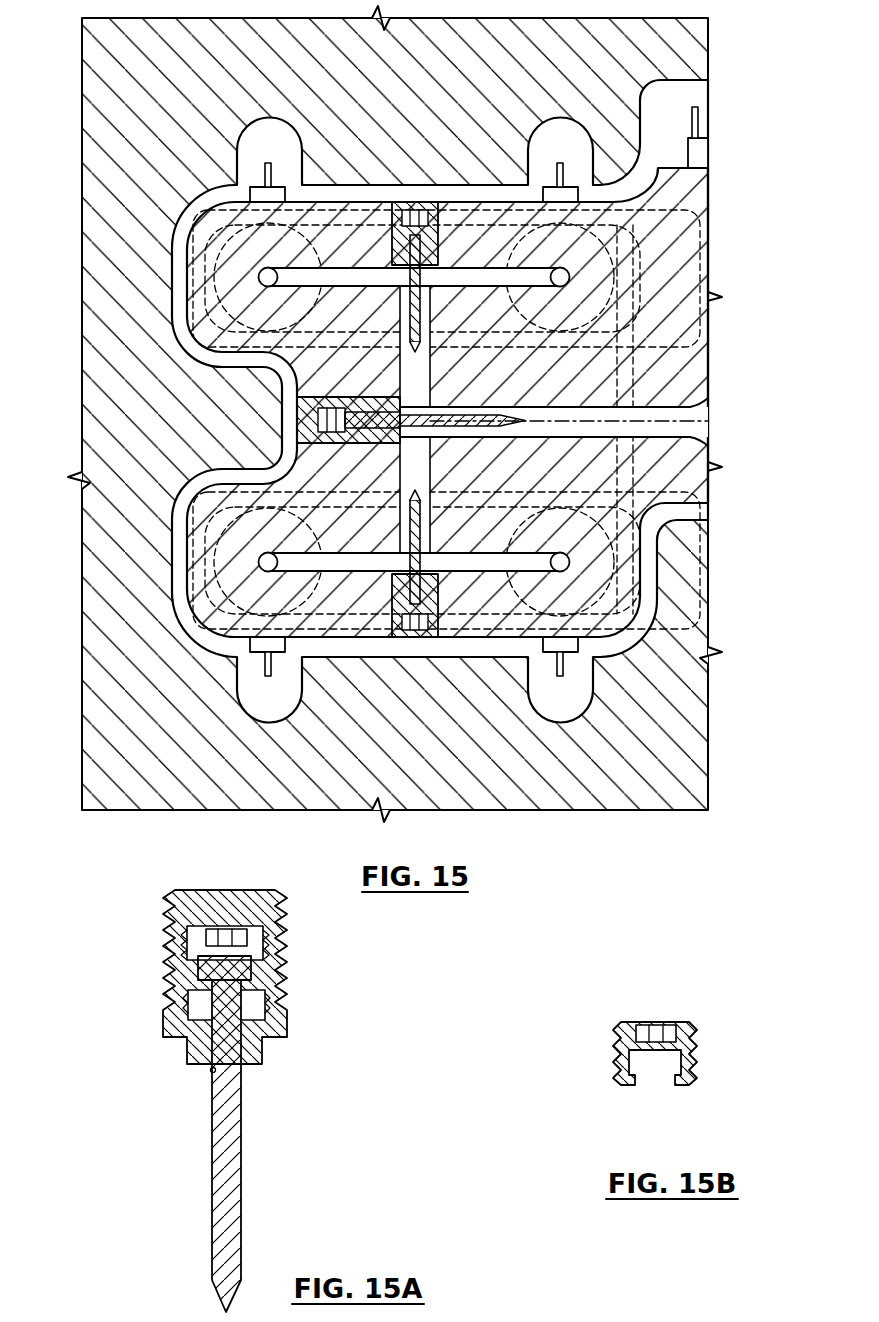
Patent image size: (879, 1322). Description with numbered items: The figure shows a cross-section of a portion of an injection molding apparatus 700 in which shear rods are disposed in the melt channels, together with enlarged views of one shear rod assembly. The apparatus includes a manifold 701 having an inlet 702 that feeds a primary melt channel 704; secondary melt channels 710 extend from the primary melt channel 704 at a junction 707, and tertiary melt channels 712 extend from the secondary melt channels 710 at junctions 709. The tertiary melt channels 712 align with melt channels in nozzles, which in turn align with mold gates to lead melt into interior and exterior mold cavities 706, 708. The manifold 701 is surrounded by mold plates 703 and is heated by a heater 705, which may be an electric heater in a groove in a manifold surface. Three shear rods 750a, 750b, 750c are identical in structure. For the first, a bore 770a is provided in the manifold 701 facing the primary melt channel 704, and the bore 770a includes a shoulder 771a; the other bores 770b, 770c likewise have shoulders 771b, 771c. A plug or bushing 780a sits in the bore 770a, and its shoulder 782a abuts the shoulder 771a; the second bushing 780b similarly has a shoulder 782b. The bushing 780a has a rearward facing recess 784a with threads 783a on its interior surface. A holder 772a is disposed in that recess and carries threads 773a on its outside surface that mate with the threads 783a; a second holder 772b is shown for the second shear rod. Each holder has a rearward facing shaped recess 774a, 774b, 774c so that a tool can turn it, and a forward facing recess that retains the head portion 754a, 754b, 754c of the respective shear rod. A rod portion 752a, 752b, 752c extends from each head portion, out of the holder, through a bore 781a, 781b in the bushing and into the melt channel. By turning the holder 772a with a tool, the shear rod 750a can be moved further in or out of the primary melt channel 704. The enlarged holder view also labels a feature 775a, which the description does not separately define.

In FIG. 15, the injection molding apparatus 700 is at (762, 176).
In FIG. 15, the manifold 701 is at (720, 458).
In FIG. 15, the inlet 702 is at (708, 421).
In FIG. 15, the mold plates 703 is at (720, 640).
In FIG. 15, the primary melt channel 704 is at (700, 408).
In FIG. 15, the heater 705 is at (700, 285).
In FIG. 15, the interior mold cavities 706 is at (655, 242).
In FIG. 15, the junction 707 is at (590, 452).
In FIG. 15, the exterior mold cavities 708 is at (205, 262).
In FIG. 15, the junctions 709 is at (395, 283).
In FIG. 15, the secondary melt channels 710 is at (530, 525).
In FIG. 15, the tertiary melt channels 712 is at (268, 662).
In FIG. 15, the shear rod 750a is at (433, 407).
In FIG. 15A, the shear rod 750a is at (231, 1065).
In FIG. 15, the shear rod 750b is at (499, 596).
In FIG. 15, the shear rod 750c is at (474, 292).
In FIG. 15, the rod portion 752a is at (540, 415).
In FIG. 15A, the rod portion 752a is at (242, 1212).
In FIG. 15, the rod portion 752b is at (425, 552).
In FIG. 15, the rod portion 752c is at (422, 325).
In FIG. 15, the head portion 754a is at (297, 412).
In FIG. 15A, the head portion 754a is at (265, 960).
In FIG. 15, the head portion 754b is at (395, 615).
In FIG. 15, the head portion 754c is at (430, 215).
In FIG. 15, the bore 770a is at (415, 408).
In FIG. 15, the bore 770b is at (485, 627).
In FIG. 15, the bore 770c is at (457, 237).
In FIG. 15, the shoulder 771a is at (436, 368).
In FIG. 15, the shoulder 771b is at (395, 585).
In FIG. 15, the shoulder 771c is at (395, 240).
In FIG. 15, the holder 772a is at (300, 440).
In FIG. 15A, the holder 772a is at (190, 900).
In FIG. 15B, the holder 772a is at (674, 1045).
In FIG. 15, the holder 772b is at (418, 640).
In FIG. 15A, the threads 773a is at (270, 975).
In FIG. 15B, the threads 773a is at (615, 1048).
In FIG. 15, the rearward facing shaped recess 774a is at (318, 421).
In FIG. 15A, the rearward facing shaped recess 774a is at (224, 928).
In FIG. 15B, the rearward facing shaped recess 774a is at (656, 1025).
In FIG. 15, the rearward facing shaped recess 774b is at (420, 640).
In FIG. 15, the rearward facing shaped recess 774c is at (415, 218).
In FIG. 15B, the recess 775a is at (658, 1065).
In FIG. 15, the bushing 780a is at (420, 450).
In FIG. 15A, the bushing 780a is at (175, 1022).
In FIG. 15, the bushing 780b is at (395, 628).
In FIG. 15, the bore 781a is at (430, 412).
In FIG. 15A, the bore 781a is at (210, 1072).
In FIG. 15, the bore 781b is at (440, 600).
In FIG. 15, the shoulder 782a is at (445, 432).
In FIG. 15A, the shoulder 782a is at (280, 1055).
In FIG. 15, the shoulder 782b is at (395, 570).
In FIG. 15A, the threads 783a is at (175, 912).
In FIG. 15A, the rearward facing recess 784a is at (265, 890).